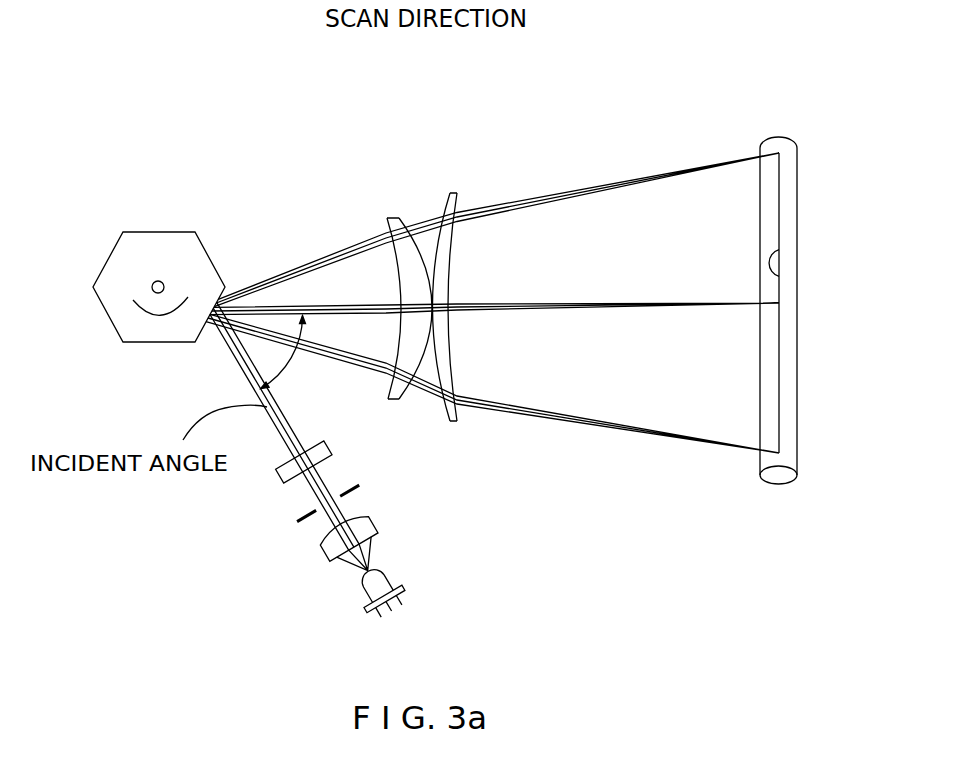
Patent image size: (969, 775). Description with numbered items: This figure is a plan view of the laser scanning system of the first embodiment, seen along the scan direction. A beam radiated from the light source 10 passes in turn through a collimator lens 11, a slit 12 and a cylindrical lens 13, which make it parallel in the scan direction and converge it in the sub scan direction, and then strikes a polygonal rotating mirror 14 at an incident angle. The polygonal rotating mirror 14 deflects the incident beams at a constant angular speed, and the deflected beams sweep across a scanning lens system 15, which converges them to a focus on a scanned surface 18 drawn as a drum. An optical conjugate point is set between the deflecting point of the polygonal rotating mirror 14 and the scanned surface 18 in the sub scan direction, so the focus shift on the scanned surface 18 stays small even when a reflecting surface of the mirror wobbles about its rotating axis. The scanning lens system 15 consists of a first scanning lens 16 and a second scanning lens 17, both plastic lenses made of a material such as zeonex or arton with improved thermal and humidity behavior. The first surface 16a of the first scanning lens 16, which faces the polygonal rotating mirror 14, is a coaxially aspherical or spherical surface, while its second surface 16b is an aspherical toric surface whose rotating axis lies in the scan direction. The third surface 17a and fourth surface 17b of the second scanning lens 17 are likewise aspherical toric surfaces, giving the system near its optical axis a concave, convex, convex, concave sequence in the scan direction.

The light source 10 is at (372, 592).
The collimator lens 11 is at (328, 553).
The slit 12 is at (297, 518).
The cylindrical lens 13 is at (284, 472).
The polygonal rotating mirror 14 is at (108, 310).
The scanning lens system 15 is at (425, 180).
The first scanning lens 16 is at (373, 313).
The first surface 16a is at (376, 248).
The second surface 16b is at (418, 228).
The second scanning lens 17 is at (496, 302).
The third surface 17a is at (440, 196).
The fourth surface 17b is at (469, 228).
The scanned surface 18 is at (780, 248).